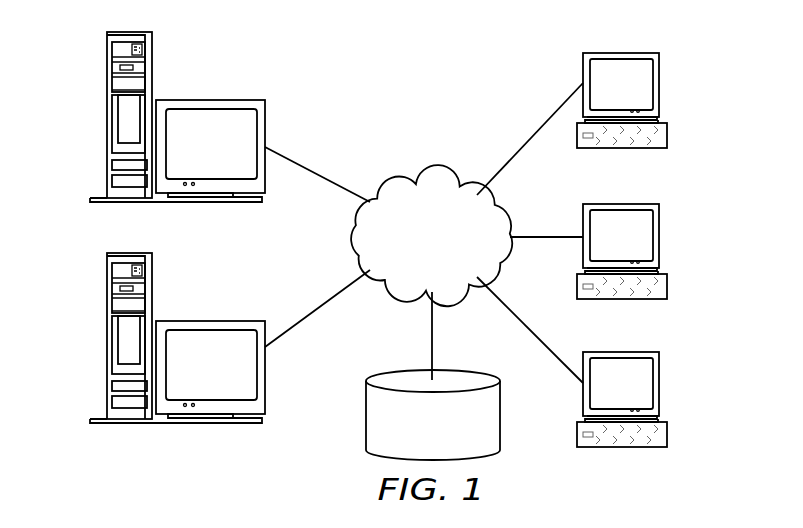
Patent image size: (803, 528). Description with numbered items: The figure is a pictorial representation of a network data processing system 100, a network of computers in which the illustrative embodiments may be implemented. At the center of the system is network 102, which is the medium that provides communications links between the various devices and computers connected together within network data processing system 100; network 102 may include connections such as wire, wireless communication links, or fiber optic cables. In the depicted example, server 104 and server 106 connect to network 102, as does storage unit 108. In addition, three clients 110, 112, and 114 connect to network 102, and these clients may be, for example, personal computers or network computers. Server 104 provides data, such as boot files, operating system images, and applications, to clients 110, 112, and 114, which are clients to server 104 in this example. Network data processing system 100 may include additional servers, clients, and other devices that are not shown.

The network data processing system 100 is at (490, 70).
The network 102 is at (403, 182).
The server 104 is at (107, 118).
The server 106 is at (107, 339).
The storage unit 108 is at (366, 425).
The client 110 is at (662, 83).
The client 112 is at (662, 234).
The client 114 is at (660, 384).